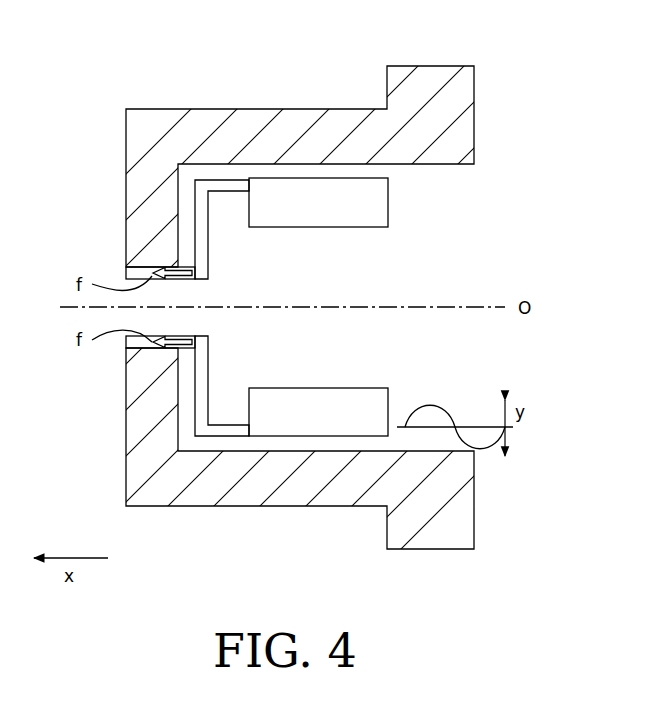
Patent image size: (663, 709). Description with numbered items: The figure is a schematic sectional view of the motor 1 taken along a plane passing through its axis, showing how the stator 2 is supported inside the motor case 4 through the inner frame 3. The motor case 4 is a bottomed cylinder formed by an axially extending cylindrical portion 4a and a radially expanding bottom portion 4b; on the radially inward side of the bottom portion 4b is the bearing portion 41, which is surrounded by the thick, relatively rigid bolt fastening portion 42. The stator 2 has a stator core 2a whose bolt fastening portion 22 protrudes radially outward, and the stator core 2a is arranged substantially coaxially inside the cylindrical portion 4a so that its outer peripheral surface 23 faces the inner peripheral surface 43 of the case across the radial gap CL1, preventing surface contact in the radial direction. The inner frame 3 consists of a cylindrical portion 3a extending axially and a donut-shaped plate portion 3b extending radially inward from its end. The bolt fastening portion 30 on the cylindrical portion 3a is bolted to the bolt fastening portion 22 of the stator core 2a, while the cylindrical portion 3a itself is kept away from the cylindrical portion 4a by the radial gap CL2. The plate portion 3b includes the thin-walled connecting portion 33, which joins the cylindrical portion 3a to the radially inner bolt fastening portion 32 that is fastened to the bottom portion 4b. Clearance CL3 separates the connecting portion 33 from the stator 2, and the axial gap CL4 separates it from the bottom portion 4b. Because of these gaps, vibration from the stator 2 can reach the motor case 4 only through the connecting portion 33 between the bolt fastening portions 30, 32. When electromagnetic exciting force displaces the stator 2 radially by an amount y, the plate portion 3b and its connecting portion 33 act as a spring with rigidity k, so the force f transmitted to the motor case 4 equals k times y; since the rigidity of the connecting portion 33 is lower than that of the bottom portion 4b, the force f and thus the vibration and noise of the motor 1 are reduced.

The motor 1 is at (331, 302).
The stator 2 is at (376, 367).
The stator core 2a is at (376, 202).
The bolt fastening portion 22 is at (387, 181).
The outer peripheral surface 23 is at (345, 446).
The inner frame 3 is at (246, 249).
The cylindrical portion 3a is at (217, 249).
The bolt fastening portion 30 is at (228, 176).
The plate portion 3b is at (251, 229).
The connecting portion 33 is at (207, 239).
The bolt fastening portion 32 is at (201, 283).
The motor case 4 is at (331, 302).
The cylindrical portion 4a is at (331, 309).
The bottom portion 4b is at (136, 188).
The bearing portion 41 is at (105, 289).
The bolt fastening portion 42 is at (129, 272).
The inner peripheral surface 43 is at (273, 450).
The radial gap CL1 is at (308, 446).
The radial gap CL2 is at (225, 446).
The clearance CL3 is at (220, 404).
The axial gap CL4 is at (185, 382).